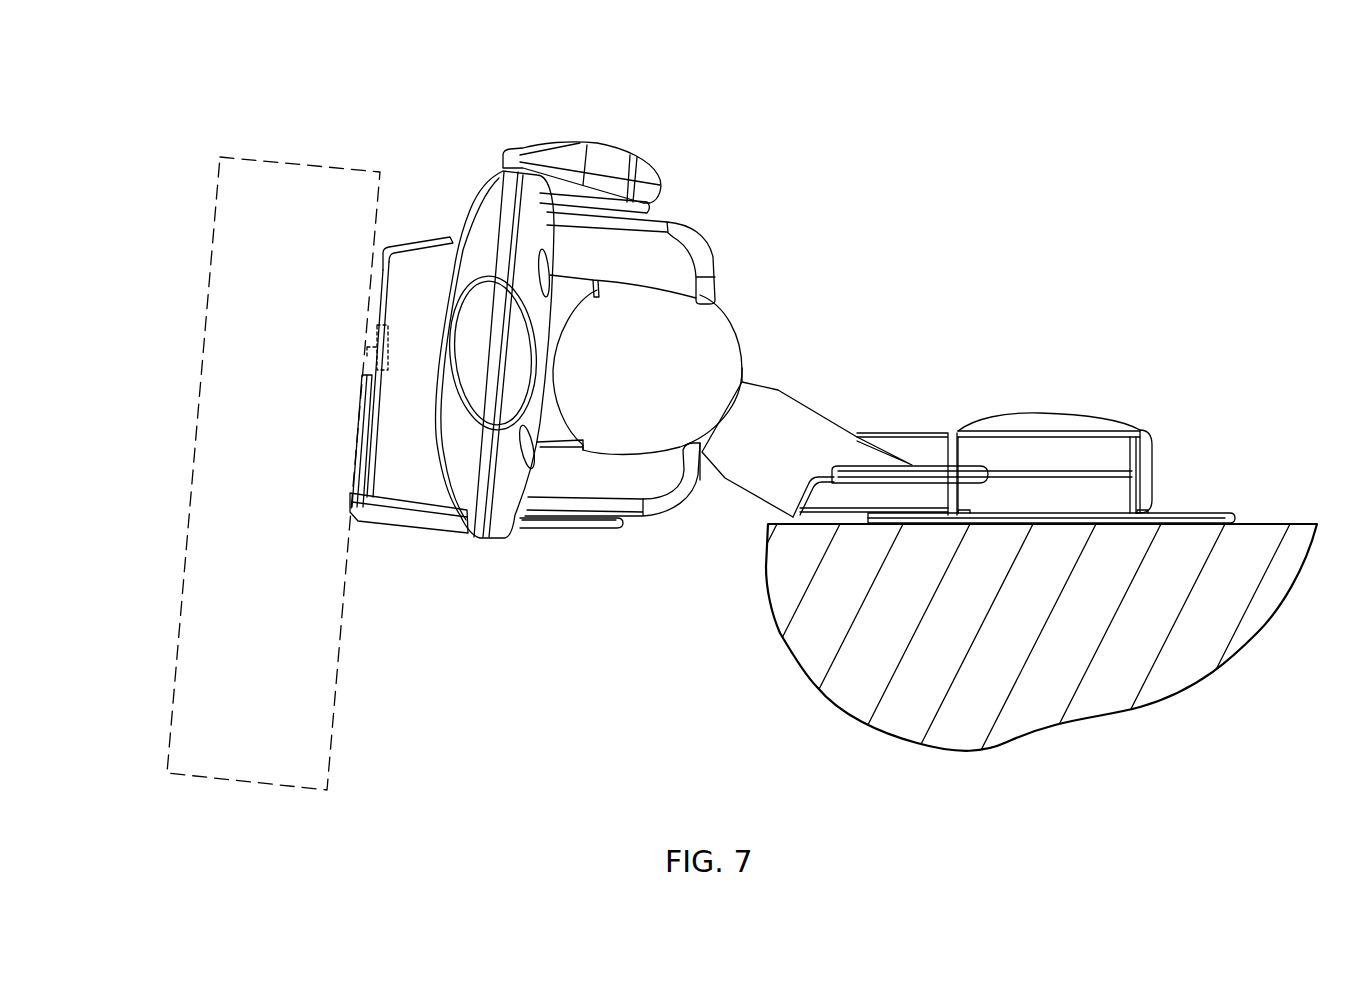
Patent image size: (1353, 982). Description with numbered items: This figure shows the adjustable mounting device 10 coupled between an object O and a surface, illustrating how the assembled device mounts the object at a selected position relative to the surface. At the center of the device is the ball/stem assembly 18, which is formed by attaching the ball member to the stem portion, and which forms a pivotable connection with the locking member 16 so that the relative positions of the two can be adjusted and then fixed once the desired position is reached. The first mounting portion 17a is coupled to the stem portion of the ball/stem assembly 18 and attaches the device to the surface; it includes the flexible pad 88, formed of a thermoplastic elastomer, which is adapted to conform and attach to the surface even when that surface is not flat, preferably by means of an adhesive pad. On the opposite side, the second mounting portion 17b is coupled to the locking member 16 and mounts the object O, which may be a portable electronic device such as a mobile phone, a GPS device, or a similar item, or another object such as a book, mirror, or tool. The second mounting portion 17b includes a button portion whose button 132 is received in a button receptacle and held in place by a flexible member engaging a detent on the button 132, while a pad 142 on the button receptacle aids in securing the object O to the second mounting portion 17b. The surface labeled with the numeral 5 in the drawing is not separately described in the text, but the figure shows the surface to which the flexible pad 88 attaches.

The adjustable mounting device 10 is at (760, 317).
The second mounting portion 17b is at (483, 317).
The first mounting portion 17a is at (1031, 413).
The ball/stem assembly 18 is at (722, 333).
The locking member 16 is at (540, 523).
The pad 142 is at (354, 470).
The button 132 is at (378, 333).
The flexible pad 88 is at (1185, 517).
The mounting surface 5 is at (1273, 525).
The object O is at (280, 770).